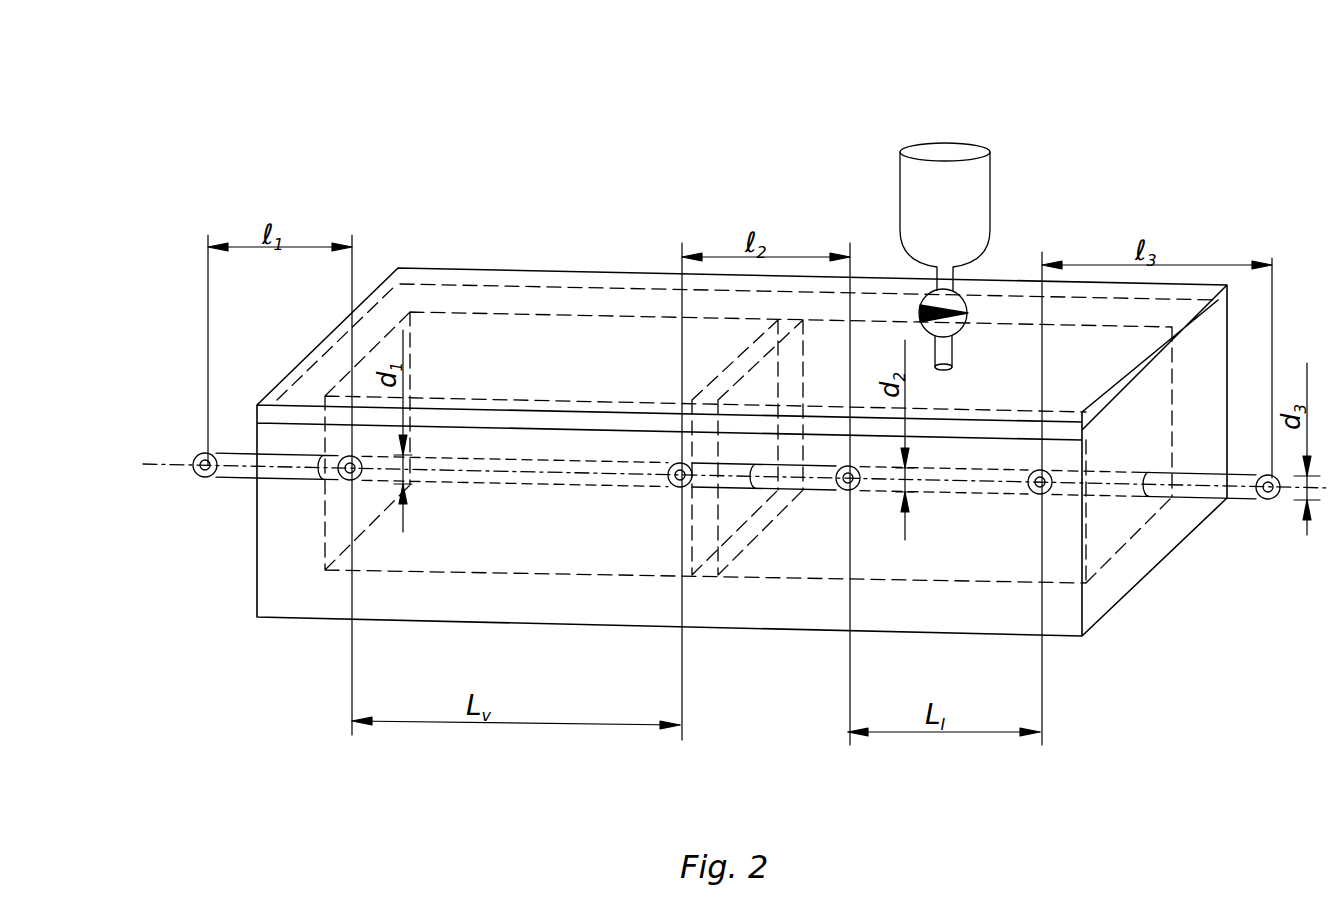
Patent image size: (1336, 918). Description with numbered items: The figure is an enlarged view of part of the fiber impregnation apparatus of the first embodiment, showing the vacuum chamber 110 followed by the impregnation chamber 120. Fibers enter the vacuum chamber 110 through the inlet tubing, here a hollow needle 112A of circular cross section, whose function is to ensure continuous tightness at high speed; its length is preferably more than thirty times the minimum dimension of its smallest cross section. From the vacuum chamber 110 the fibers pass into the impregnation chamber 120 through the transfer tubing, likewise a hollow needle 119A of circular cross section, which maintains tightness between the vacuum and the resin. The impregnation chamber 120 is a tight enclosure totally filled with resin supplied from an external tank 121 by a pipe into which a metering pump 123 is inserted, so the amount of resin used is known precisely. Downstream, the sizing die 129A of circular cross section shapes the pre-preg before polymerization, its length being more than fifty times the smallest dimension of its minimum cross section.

The vacuum chamber 110 is at (487, 355).
The hollow needle 112A is at (220, 478).
The hollow needle 119A is at (797, 484).
The sizing die 129A is at (1218, 500).
The impregnation chamber 120 is at (948, 202).
The external tank 121 is at (937, 187).
The metering pump 123 is at (917, 293).